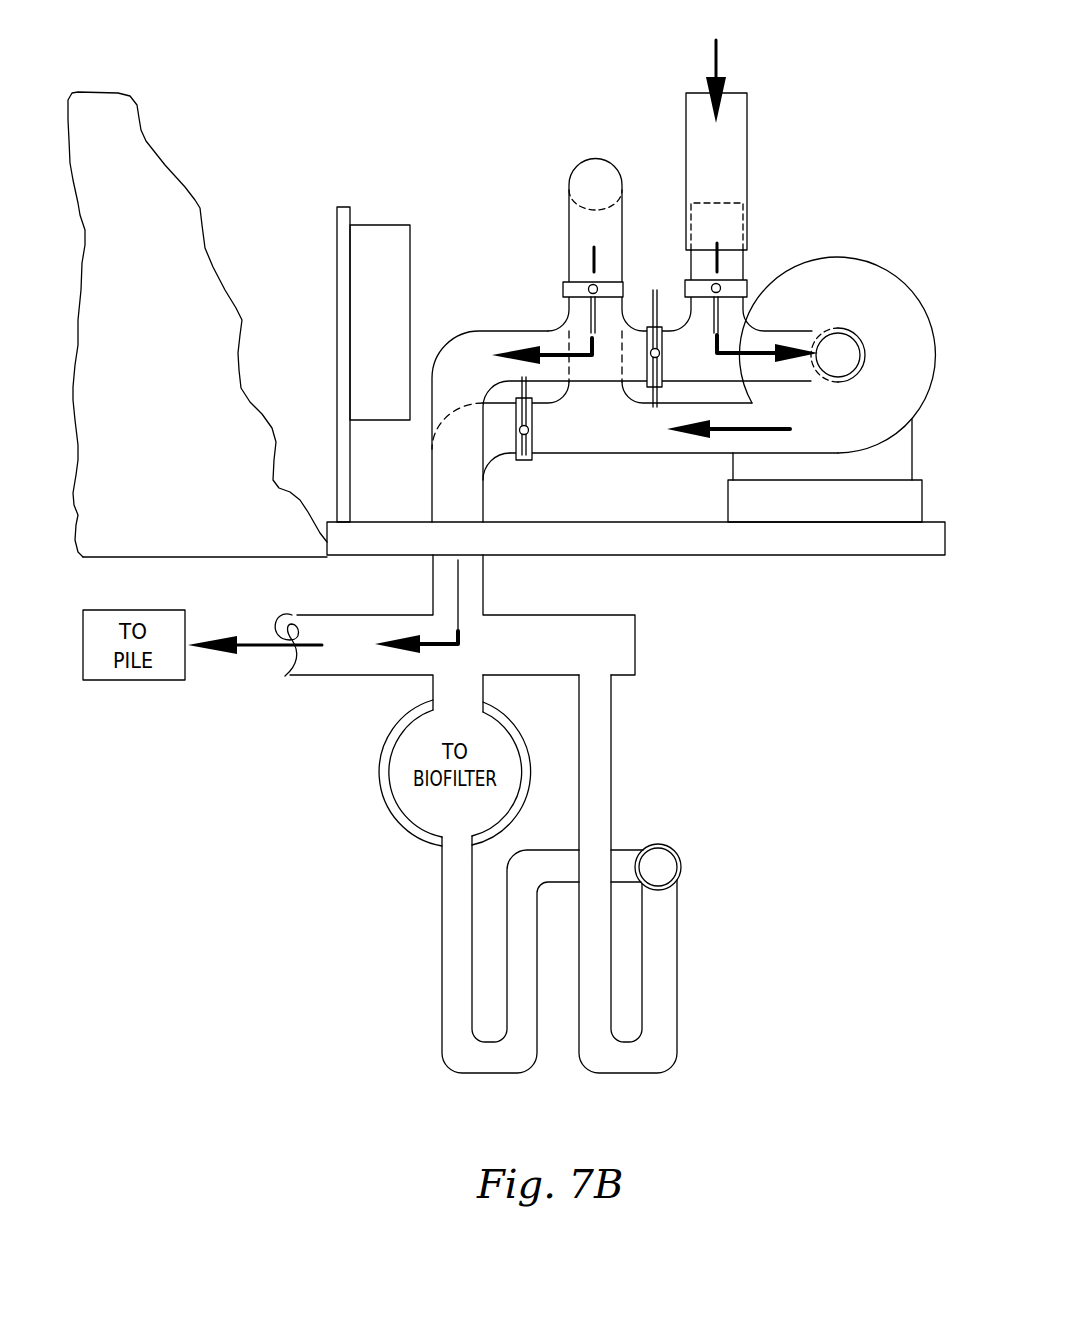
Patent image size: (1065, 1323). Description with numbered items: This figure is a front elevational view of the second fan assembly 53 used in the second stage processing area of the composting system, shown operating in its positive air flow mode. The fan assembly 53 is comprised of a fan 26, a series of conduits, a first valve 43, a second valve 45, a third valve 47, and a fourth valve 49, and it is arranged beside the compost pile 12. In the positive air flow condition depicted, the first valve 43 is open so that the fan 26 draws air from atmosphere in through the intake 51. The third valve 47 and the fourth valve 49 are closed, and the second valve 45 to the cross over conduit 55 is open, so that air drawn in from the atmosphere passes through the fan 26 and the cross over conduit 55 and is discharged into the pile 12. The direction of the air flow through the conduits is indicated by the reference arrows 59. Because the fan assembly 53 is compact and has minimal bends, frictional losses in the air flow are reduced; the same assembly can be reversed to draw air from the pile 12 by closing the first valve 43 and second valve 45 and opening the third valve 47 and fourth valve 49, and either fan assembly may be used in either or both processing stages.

The pile 12 is at (144, 356).
The second fan assembly 53 is at (320, 188).
The cross over conduit 55 is at (592, 175).
The intake 51 is at (684, 78).
The second valve 45 is at (588, 318).
The first valve 43 is at (748, 320).
The third valve 47 is at (647, 365).
The fourth valve 49 is at (530, 433).
The fan 26 is at (846, 232).
The reference arrow 59 is at (712, 72).